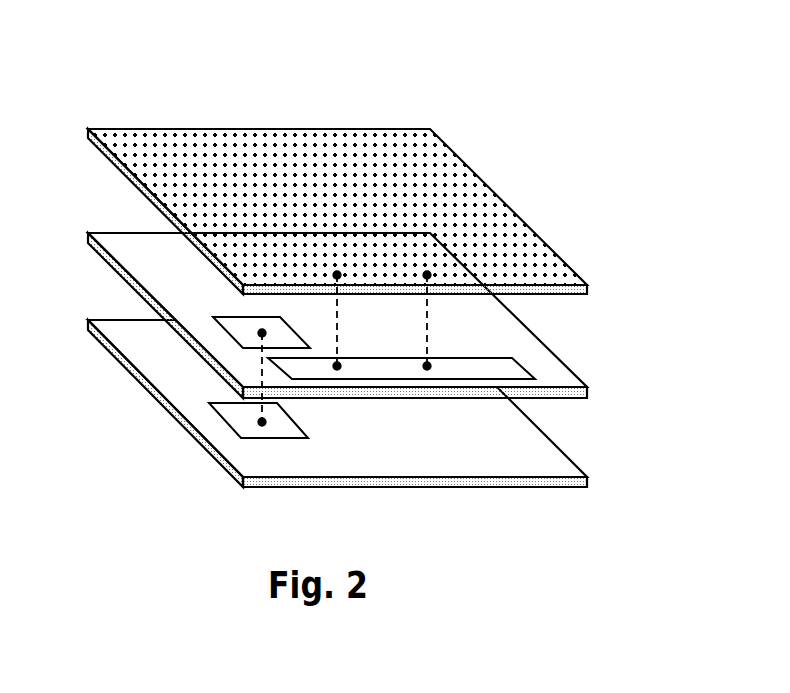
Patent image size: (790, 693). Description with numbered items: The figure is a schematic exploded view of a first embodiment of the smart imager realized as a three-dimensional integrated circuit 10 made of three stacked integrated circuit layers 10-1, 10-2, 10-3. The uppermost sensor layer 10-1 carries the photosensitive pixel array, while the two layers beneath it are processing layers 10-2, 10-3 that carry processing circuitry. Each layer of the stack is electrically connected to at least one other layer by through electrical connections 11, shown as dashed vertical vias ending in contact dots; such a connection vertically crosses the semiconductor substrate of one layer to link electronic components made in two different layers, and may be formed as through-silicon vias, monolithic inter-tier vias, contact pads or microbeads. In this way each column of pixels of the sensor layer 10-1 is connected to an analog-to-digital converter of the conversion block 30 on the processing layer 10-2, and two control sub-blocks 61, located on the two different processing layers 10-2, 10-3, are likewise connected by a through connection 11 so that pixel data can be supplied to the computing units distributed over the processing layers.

The three-dimensional integrated circuit 10 is at (374, 253).
The sensor layer 10-1 is at (488, 186).
The processing layer 10-2 is at (570, 368).
The processing layer 10-3 is at (570, 458).
The through electrical connection 11 is at (262, 372).
The conversion block 30 is at (465, 358).
The control sub-block 61 is at (227, 313).